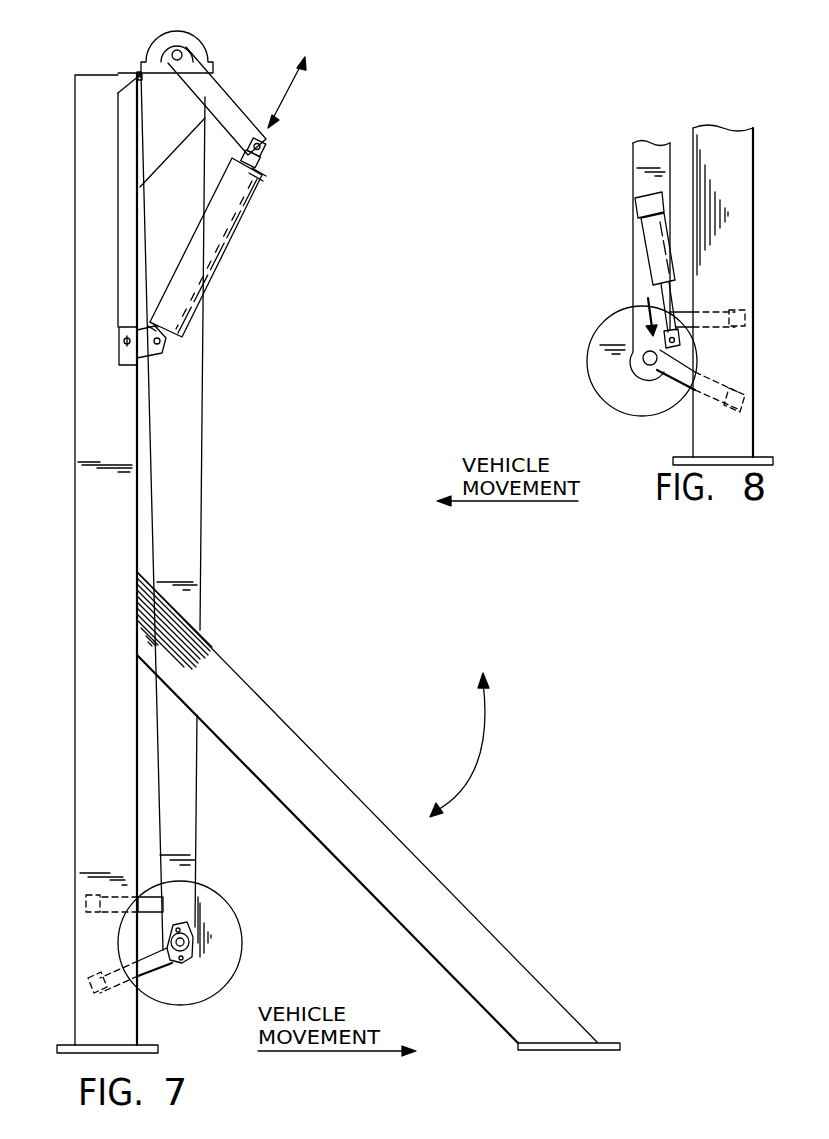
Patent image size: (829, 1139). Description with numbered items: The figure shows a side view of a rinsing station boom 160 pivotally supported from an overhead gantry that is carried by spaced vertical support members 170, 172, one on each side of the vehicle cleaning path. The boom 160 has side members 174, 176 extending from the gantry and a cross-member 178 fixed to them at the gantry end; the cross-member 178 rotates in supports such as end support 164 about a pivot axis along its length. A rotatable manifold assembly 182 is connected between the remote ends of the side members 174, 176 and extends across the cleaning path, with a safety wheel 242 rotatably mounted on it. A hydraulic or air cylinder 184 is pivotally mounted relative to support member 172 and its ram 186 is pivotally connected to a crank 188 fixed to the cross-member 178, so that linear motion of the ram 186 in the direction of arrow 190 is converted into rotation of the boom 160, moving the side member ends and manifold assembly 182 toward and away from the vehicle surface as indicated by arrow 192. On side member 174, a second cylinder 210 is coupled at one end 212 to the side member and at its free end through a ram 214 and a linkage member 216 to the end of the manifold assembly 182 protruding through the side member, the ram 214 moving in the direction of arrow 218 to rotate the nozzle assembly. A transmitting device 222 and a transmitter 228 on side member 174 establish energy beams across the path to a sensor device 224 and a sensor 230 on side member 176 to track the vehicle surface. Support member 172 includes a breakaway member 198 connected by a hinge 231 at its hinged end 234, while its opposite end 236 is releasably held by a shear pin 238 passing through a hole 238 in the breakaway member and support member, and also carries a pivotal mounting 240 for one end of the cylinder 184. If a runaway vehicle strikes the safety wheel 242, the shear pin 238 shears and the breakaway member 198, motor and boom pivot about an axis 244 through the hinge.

In FIG. 7, the boom 160 is at (212, 356).
In FIG. 7, the end support 164 is at (194, 37).
In FIG. 8, the vertical support member 170 is at (723, 181).
In FIG. 7, the vertical support member 172 is at (96, 560).
In FIG. 8, the side member 174 is at (648, 160).
In FIG. 7, the side member 176 is at (190, 440).
In FIG. 7, the cross-member 178 is at (177, 50).
In FIG. 8, the manifold assembly 182 is at (647, 367).
In FIG. 7, the cylinder 184 is at (237, 203).
In FIG. 7, the ram 186 is at (264, 154).
In FIG. 7, the crank 188 is at (245, 117).
In FIG. 7, the arrow 190 is at (290, 90).
In FIG. 7, the arrow 192 is at (485, 735).
In FIG. 7, the breakaway member 198 is at (127, 258).
In FIG. 8, the cylinder 210 is at (652, 248).
In FIG. 8, the end 212 is at (641, 208).
In FIG. 8, the ram 214 is at (660, 294).
In FIG. 8, the linkage member 216 is at (676, 342).
In FIG. 8, the arrow 218 is at (646, 318).
In FIG. 8, the transmitting device 222 is at (742, 306).
In FIG. 7, the sensor device 224 is at (87, 903).
In FIG. 8, the transmitter 228 is at (744, 393).
In FIG. 7, the sensor 230 is at (88, 982).
In FIG. 7, the hinge 231 is at (140, 77).
In FIG. 7, the hinged end 234 is at (130, 88).
In FIG. 7, the opposite end 236 is at (122, 320).
In FIG. 7, the shear pin 238 is at (127, 346).
In FIG. 7, the pivotal mounting 240 is at (158, 348).
In FIG. 7, the safety wheel 242 is at (240, 918).
In FIG. 8, the safety wheel 242 is at (592, 378).
In FIG. 7, the axis 244 is at (141, 78).